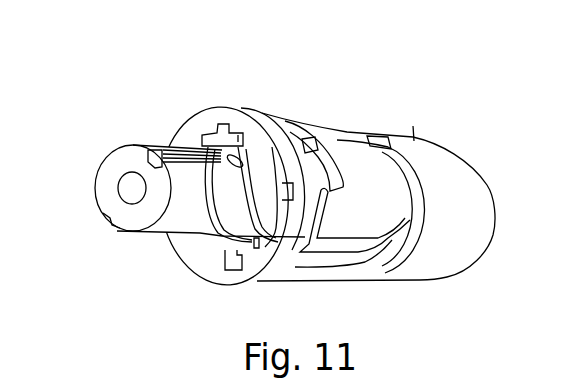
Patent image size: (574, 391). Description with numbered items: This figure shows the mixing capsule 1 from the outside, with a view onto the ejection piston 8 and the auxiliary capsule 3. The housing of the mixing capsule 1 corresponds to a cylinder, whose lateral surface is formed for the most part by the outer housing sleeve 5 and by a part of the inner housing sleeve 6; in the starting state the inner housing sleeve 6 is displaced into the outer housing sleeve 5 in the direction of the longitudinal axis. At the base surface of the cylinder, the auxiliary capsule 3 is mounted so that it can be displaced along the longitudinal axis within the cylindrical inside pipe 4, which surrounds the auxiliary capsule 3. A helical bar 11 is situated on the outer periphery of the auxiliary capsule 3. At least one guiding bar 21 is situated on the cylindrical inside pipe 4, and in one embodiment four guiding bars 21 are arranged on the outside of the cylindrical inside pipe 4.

The mixing capsule 1 is at (64, 55).
The auxiliary capsule 3 is at (201, 241).
The cylindrical inside pipe 4 is at (262, 114).
The outer housing sleeve 5 is at (414, 138).
The inner housing sleeve 6 is at (197, 127).
The ejection piston 8 is at (107, 153).
The helical bar 11 is at (257, 248).
The guiding bar 21 is at (222, 122).